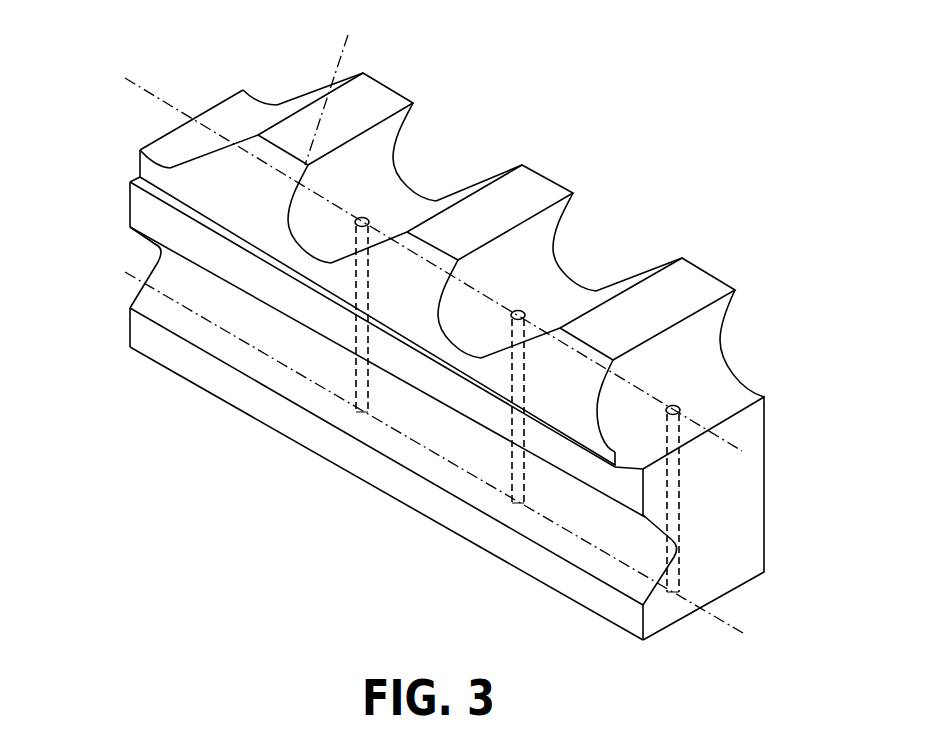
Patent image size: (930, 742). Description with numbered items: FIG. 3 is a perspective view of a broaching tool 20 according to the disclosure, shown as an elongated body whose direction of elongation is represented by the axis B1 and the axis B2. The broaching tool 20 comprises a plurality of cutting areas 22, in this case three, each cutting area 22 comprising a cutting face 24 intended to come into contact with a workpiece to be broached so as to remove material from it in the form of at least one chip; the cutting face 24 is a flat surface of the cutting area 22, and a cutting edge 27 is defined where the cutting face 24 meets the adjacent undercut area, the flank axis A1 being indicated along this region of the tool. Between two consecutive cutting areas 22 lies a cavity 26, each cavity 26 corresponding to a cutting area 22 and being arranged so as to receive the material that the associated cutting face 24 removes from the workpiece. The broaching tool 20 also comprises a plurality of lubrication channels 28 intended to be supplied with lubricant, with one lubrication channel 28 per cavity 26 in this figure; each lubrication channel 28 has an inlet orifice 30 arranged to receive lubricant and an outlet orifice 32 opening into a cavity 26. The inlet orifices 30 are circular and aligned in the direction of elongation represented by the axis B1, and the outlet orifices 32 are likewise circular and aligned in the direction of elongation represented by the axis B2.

The broaching tool 20 is at (478, 343).
The cutting area 22 is at (483, 238).
The cutting face 24 is at (397, 123).
The cavity 26 is at (430, 175).
The cutting edge 27 is at (333, 180).
The lubrication channel 28 is at (346, 368).
The inlet orifice 30 is at (362, 432).
The outlet orifice 32 is at (366, 218).
The flank axis A1 is at (338, 54).
The axis B1 is at (125, 268).
The axis B2 is at (135, 94).